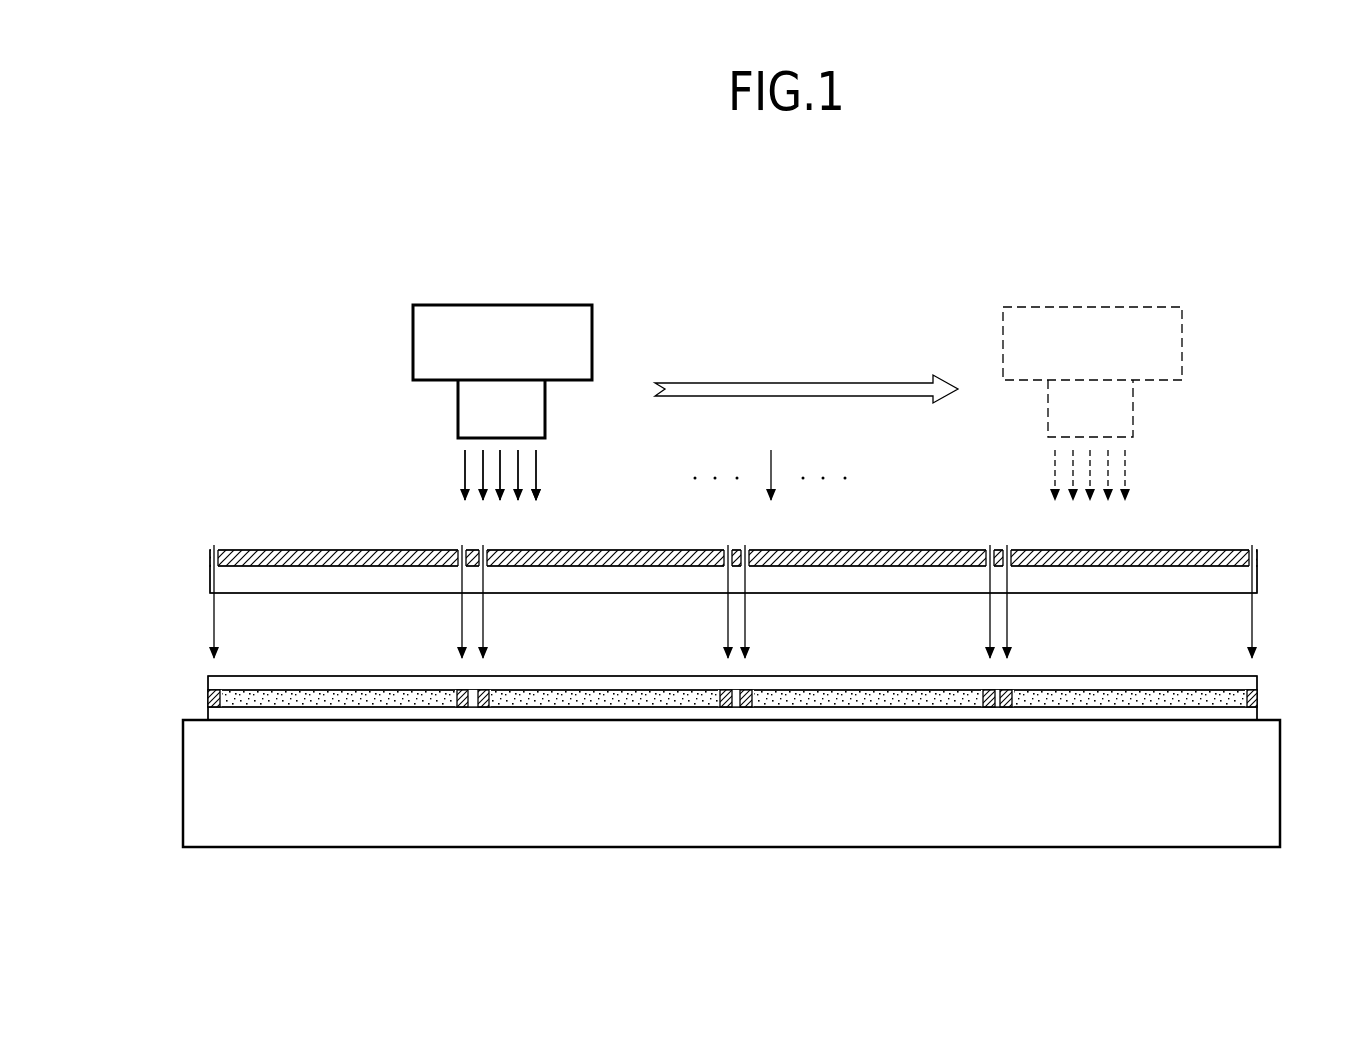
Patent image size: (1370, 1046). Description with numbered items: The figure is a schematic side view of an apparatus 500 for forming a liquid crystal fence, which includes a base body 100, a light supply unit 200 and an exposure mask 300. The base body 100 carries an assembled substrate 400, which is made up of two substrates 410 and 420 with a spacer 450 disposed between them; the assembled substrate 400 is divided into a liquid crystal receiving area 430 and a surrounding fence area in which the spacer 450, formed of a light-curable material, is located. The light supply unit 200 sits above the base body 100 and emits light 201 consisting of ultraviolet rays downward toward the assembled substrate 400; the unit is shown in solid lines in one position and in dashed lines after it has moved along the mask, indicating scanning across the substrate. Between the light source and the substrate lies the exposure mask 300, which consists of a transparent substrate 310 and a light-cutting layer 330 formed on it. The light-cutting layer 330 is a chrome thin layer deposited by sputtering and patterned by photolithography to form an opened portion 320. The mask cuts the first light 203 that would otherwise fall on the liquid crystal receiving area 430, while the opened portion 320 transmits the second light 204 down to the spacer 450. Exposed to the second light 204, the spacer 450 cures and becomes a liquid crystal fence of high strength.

The base body 100 is at (1260, 787).
The light supply unit 200 is at (570, 290).
The light 201 is at (465, 468).
The first light 203 is at (771, 458).
The second light 204 is at (745, 620).
The exposure mask 300 is at (252, 541).
The transparent substrate 310 is at (1222, 588).
The opened portion 320 is at (745, 548).
The light-cutting layer 330 is at (1213, 552).
The assembled substrate 400 is at (1216, 668).
The substrate 410 is at (208, 712).
The substrate 420 is at (208, 688).
The liquid crystal receiving area 430 is at (333, 700).
The spacer 450 is at (480, 697).
The apparatus for forming a liquid crystal fence 500 is at (1252, 265).